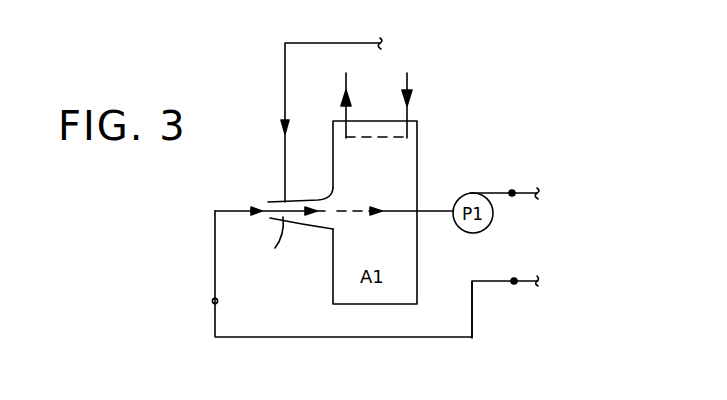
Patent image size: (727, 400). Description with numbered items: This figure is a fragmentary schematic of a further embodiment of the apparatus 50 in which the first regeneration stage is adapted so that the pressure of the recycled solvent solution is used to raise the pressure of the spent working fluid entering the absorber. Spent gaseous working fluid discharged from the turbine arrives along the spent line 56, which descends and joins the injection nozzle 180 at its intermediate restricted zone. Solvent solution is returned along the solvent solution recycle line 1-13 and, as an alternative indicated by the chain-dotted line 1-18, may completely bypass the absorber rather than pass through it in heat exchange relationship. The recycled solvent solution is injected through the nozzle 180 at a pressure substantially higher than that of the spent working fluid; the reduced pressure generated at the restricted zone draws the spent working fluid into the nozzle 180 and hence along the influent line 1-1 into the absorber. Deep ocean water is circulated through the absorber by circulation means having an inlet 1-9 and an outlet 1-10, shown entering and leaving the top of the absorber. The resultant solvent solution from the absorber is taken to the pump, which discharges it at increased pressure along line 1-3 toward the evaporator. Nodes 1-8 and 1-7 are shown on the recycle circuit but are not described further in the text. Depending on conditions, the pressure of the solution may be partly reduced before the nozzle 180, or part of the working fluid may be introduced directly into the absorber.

The spent line 56 is at (324, 43).
The injection nozzle 180 is at (275, 192).
The influent line 1-1 is at (273, 243).
The outlet 1-10 is at (348, 82).
The inlet 1-9 is at (410, 82).
The line 1-3 is at (512, 190).
The apparatus 50 is at (528, 126).
The node 1-8 is at (212, 302).
The chain-dotted line 1-18 is at (361, 339).
The node 1-7 is at (516, 279).
The solvent solution recycle line 1-13 is at (483, 284).